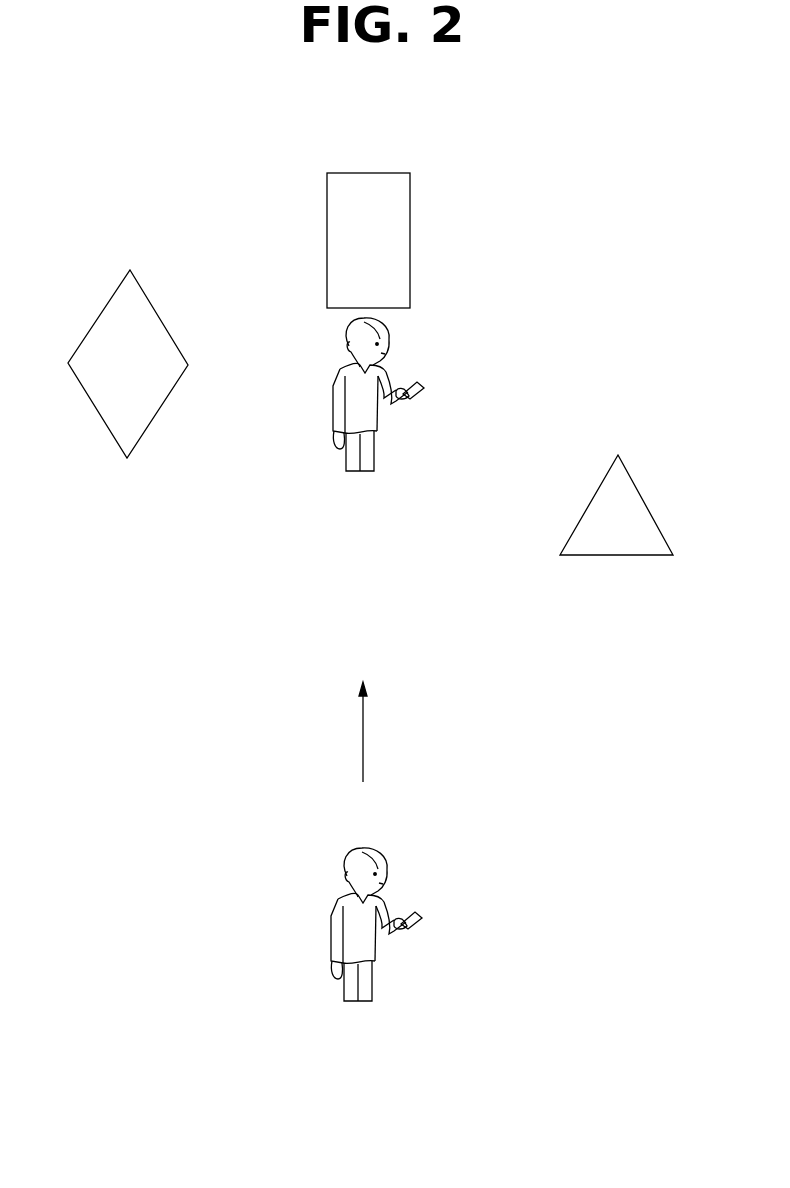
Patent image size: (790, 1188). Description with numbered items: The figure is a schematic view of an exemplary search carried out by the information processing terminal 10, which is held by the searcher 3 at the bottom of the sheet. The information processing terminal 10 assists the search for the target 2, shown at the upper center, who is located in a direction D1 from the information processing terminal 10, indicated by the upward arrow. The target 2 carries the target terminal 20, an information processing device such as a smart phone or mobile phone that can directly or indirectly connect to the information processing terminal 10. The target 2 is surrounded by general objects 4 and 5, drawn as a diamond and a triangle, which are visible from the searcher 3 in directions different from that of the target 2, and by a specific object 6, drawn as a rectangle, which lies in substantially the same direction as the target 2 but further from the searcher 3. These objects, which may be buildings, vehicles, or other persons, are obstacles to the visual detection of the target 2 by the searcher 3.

The target 2 is at (332, 391).
The searcher 3 is at (328, 922).
The general object 4 is at (162, 318).
The general object 5 is at (592, 500).
The specific object 6 is at (410, 228).
The information processing terminal 10 is at (418, 920).
The target terminal 20 is at (422, 390).
The direction D1 is at (363, 738).